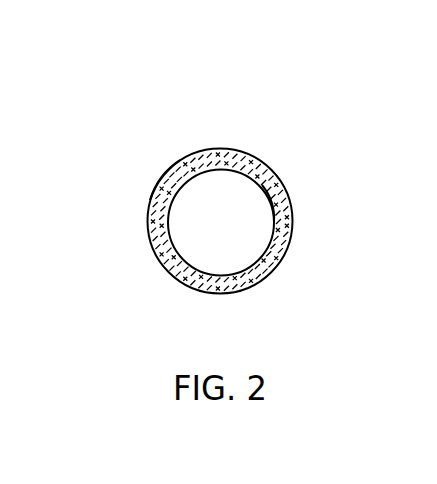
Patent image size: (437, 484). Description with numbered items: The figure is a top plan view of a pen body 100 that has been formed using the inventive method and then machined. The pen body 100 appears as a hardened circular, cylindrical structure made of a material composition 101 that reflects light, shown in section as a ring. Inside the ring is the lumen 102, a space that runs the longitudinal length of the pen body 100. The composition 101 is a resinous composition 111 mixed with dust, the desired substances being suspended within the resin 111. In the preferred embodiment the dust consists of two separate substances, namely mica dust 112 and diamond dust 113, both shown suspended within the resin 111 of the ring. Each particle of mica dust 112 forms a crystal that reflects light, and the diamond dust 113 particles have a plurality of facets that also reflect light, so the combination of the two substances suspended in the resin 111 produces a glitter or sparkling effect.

The pen body 100 is at (292, 104).
The material composition 101 is at (293, 222).
The lumen 102 is at (198, 249).
The resinous composition 111 is at (198, 160).
The mica dust 112 is at (159, 180).
The diamond dust 113 is at (273, 177).